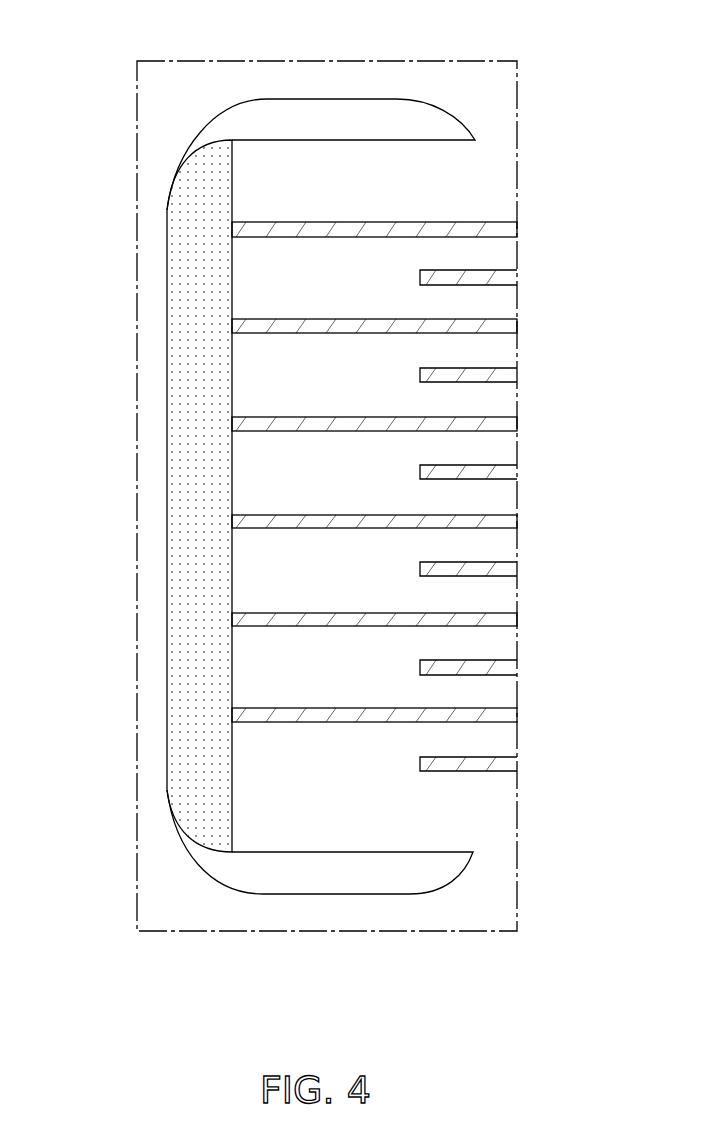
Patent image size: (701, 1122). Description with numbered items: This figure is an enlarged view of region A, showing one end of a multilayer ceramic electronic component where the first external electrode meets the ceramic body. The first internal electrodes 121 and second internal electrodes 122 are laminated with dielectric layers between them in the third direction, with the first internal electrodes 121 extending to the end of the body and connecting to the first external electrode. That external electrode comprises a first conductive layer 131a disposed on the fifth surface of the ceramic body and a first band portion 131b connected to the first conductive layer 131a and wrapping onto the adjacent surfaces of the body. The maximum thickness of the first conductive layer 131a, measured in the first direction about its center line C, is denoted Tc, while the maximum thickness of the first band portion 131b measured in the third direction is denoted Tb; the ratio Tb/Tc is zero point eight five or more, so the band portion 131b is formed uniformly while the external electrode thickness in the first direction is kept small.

The first conductive layer 131a is at (190, 370).
The first band portion 131b is at (297, 110).
The first internal electrode 121 is at (517, 231).
The second internal electrode 122 is at (513, 279).
The maximum thickness of band portion Tb is at (364, 178).
The maximum thickness of conductive layer Tc is at (195, 497).
The center line C is at (517, 497).
The region A is at (337, 1034).